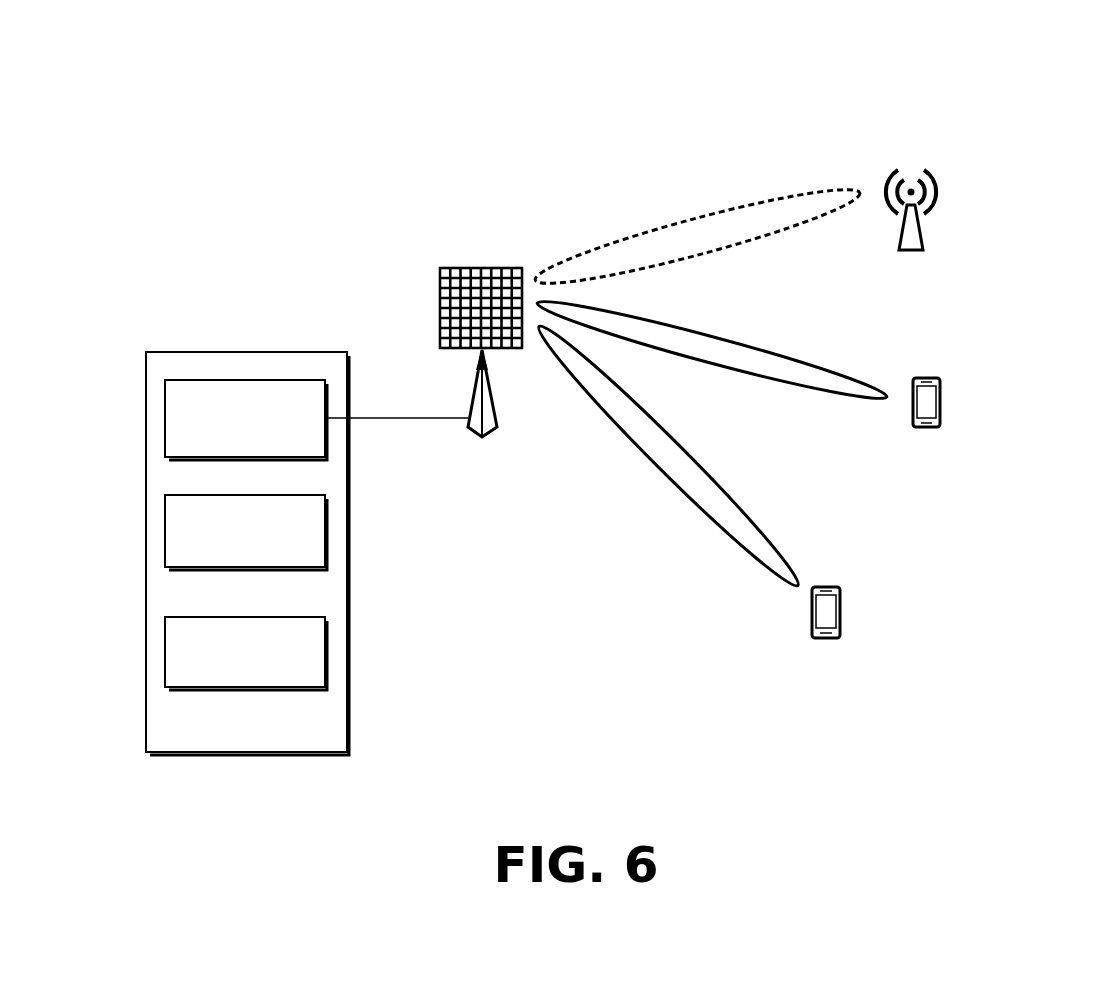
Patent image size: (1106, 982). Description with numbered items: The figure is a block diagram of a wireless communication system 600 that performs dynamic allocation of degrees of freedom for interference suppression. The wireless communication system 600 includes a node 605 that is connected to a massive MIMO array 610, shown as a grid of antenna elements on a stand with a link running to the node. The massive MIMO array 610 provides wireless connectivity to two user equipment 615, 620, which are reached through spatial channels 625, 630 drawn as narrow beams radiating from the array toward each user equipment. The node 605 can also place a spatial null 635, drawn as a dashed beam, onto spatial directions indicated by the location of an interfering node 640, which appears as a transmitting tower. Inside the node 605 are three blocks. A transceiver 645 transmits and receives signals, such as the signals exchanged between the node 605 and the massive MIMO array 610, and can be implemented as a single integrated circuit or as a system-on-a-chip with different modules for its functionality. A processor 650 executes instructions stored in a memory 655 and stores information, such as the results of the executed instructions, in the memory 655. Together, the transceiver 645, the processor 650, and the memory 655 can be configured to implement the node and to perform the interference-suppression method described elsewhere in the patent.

The wireless communication system 600 is at (1004, 101).
The node 605 is at (292, 736).
The massive MIMO array 610 is at (482, 266).
The user equipment 615 is at (841, 612).
The user equipment 620 is at (941, 402).
The spatial channel 625 is at (677, 483).
The spatial channel 630 is at (807, 392).
The spatial null 635 is at (690, 226).
The interfering node 640 is at (923, 241).
The transceiver 645 is at (260, 441).
The processor 650 is at (260, 555).
The memory 655 is at (260, 675).